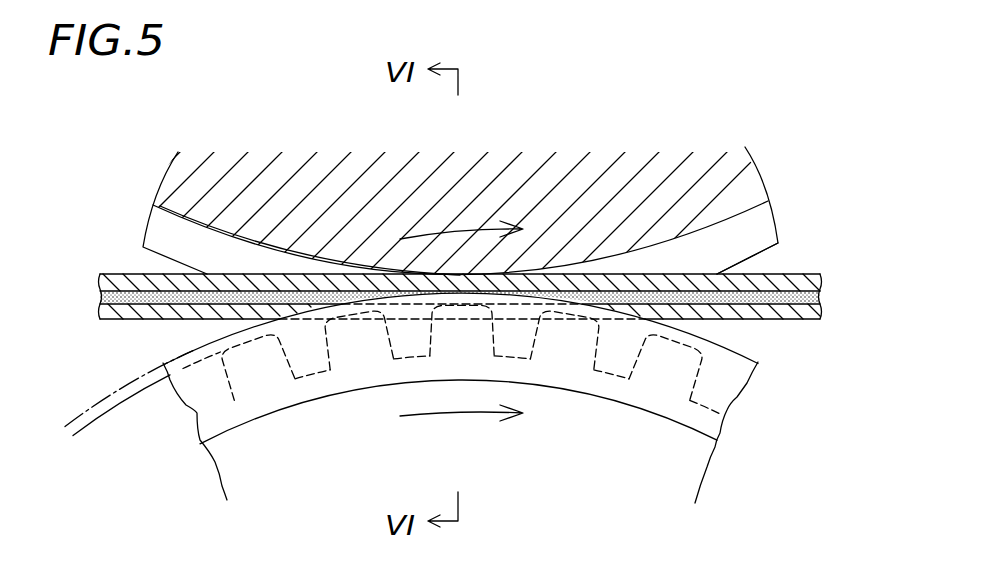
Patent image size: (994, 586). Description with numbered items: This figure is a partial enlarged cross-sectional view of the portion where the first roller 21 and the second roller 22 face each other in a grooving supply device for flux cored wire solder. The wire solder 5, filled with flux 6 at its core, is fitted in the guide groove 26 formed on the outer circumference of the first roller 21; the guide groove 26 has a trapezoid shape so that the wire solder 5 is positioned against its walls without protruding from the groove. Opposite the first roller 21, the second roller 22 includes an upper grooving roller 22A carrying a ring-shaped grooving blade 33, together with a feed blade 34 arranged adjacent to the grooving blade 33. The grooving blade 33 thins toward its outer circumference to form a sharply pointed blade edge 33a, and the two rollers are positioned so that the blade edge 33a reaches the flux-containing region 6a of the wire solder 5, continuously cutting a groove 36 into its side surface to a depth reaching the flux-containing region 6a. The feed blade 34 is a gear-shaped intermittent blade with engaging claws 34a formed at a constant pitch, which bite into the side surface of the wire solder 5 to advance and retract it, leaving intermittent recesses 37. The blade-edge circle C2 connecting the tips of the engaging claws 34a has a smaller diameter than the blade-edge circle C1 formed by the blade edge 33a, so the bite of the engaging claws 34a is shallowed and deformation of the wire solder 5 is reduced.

The first roller 21 is at (780, 159).
The guide groove 26 is at (200, 222).
The recesses 37 is at (685, 310).
The wire solder 5 is at (459, 270).
The flux 6 is at (98, 298).
The flux-containing region 6a is at (121, 289).
The groove 36 is at (752, 319).
The second roller 22 is at (446, 414).
The grooving roller 22A is at (432, 412).
The grooving blade 33 is at (515, 375).
The blade edge 33a is at (717, 338).
The feed blade 34 is at (452, 412).
The engaging claws 34a is at (571, 392).
The blade-edge circle C1 is at (91, 402).
The blade-edge circle C2 is at (90, 428).